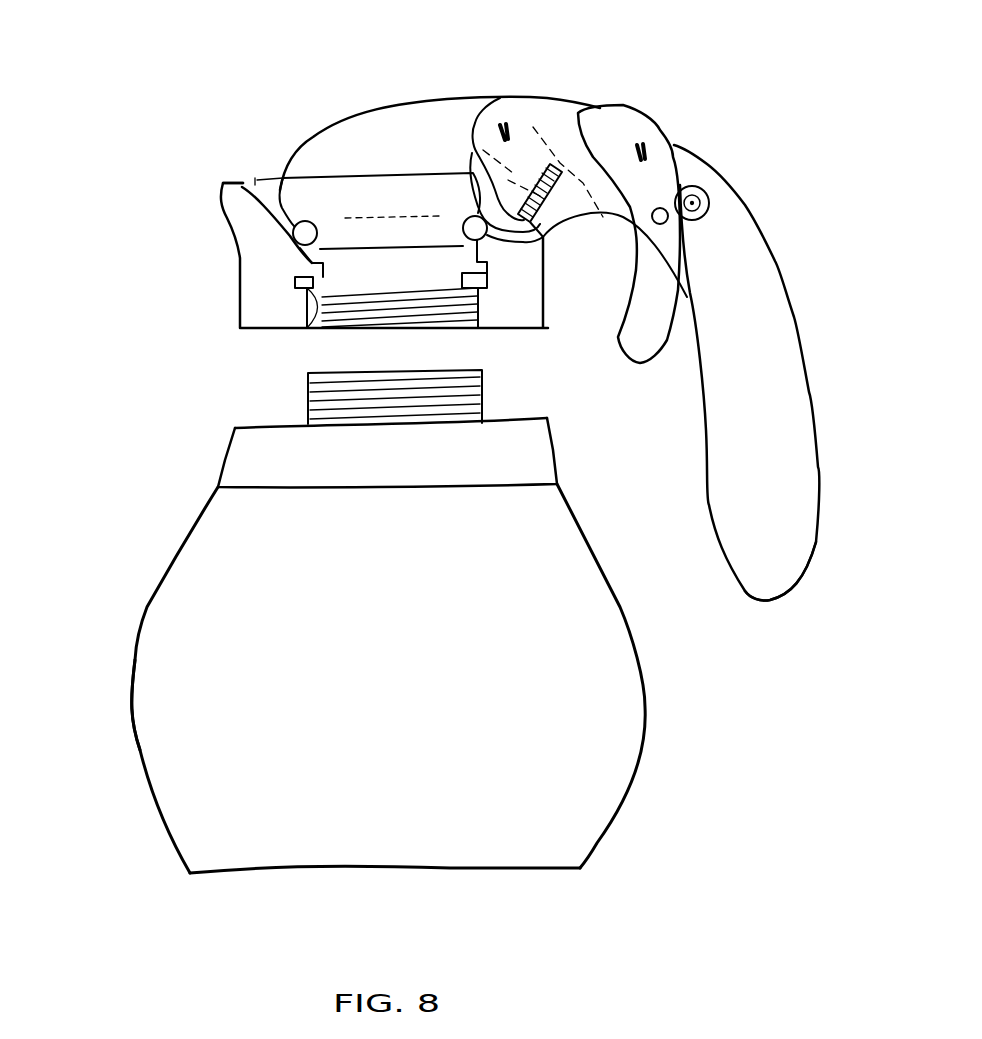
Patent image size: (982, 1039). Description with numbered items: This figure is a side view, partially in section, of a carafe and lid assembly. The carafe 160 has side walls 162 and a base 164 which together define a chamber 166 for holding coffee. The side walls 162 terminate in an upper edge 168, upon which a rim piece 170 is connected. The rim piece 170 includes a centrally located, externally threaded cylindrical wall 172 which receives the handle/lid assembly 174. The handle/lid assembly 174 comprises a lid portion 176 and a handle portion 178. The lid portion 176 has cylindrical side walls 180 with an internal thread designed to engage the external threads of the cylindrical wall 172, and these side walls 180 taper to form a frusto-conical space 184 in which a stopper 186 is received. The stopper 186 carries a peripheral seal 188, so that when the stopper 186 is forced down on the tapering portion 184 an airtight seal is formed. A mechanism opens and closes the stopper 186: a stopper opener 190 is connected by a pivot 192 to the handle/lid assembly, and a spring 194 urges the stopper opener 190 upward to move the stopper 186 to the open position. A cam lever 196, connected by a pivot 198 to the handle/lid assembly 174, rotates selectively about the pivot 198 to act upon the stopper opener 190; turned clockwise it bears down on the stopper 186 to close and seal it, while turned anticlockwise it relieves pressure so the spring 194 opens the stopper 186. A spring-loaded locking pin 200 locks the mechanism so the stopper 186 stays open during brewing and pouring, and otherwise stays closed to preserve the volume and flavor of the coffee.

The carafe 160 is at (160, 660).
The side walls 162 is at (140, 745).
The base 164 is at (530, 870).
The chamber 166 is at (378, 688).
The upper edge 168 is at (212, 467).
The rim piece 170 is at (245, 445).
The externally threaded cylindrical wall 172 is at (473, 394).
The handle/lid assembly 174 is at (809, 554).
The lid portion 176 is at (247, 238).
The handle portion 178 is at (760, 293).
The cylindrical side walls 180 is at (533, 300).
The frusto-conical space 184 is at (253, 183).
The stopper 186 is at (365, 192).
The peripheral seal 188 is at (490, 237).
The stopper opener 190 is at (490, 128).
The pivot 192 is at (490, 100).
The spring 194 is at (550, 167).
The cam lever 196 is at (636, 347).
The pivot 198 is at (643, 148).
The spring-loaded locking pin 200 is at (712, 192).